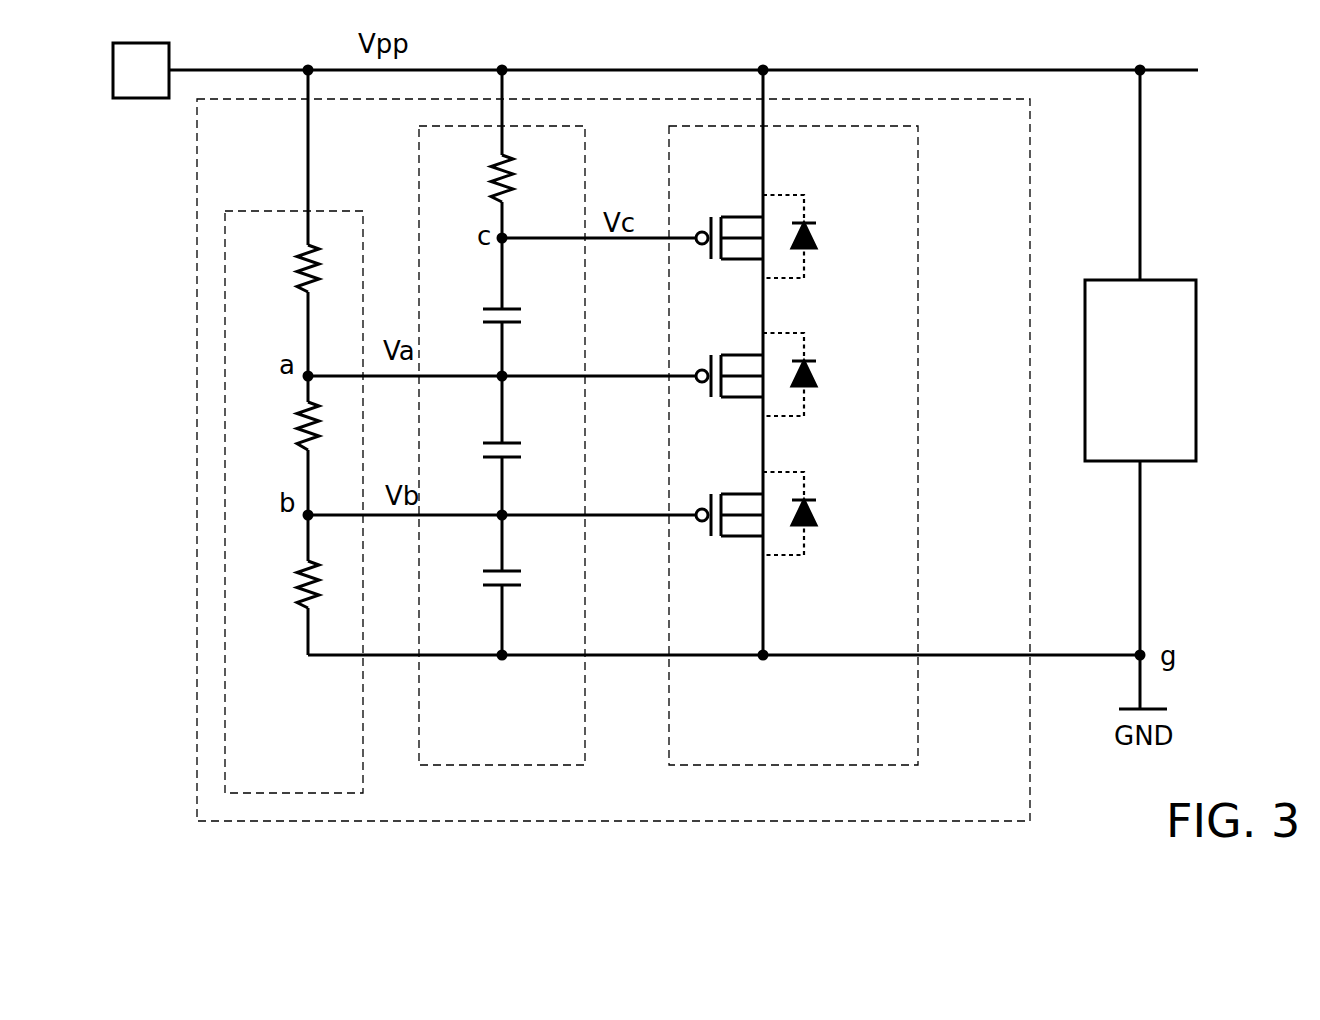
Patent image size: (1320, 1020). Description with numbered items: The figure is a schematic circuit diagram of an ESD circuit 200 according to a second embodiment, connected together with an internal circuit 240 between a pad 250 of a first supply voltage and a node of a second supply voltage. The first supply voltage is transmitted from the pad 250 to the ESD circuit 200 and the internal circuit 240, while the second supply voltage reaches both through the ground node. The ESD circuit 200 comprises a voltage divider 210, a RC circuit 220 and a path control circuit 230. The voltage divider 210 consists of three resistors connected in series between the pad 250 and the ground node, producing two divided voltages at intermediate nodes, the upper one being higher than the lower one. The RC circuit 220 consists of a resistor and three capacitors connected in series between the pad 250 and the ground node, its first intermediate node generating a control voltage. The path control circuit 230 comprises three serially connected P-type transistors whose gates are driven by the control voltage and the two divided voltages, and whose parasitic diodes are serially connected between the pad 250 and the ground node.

The ESD circuit 200 is at (748, 807).
The voltage divider 210 is at (270, 783).
The RC circuit 220 is at (478, 757).
The path control circuit 230 is at (755, 758).
The internal circuit 240 is at (1118, 449).
The pad 250 is at (141, 98).